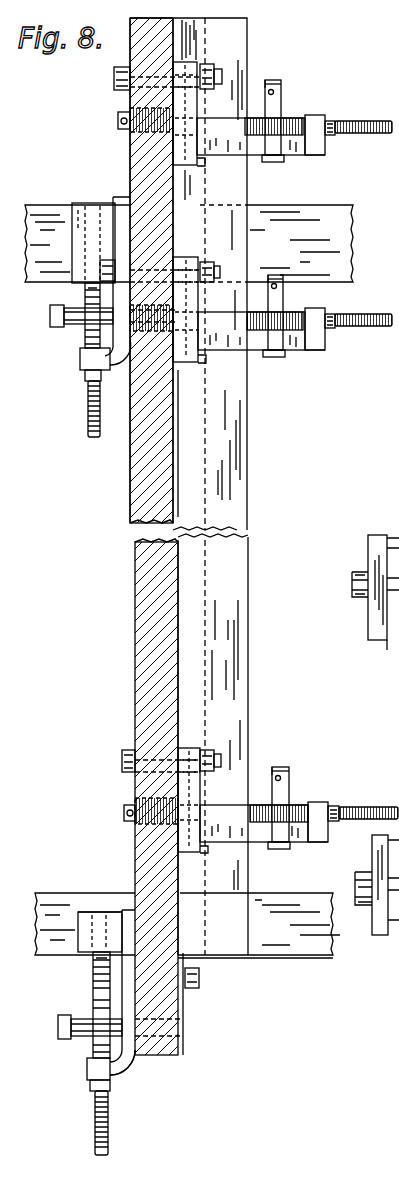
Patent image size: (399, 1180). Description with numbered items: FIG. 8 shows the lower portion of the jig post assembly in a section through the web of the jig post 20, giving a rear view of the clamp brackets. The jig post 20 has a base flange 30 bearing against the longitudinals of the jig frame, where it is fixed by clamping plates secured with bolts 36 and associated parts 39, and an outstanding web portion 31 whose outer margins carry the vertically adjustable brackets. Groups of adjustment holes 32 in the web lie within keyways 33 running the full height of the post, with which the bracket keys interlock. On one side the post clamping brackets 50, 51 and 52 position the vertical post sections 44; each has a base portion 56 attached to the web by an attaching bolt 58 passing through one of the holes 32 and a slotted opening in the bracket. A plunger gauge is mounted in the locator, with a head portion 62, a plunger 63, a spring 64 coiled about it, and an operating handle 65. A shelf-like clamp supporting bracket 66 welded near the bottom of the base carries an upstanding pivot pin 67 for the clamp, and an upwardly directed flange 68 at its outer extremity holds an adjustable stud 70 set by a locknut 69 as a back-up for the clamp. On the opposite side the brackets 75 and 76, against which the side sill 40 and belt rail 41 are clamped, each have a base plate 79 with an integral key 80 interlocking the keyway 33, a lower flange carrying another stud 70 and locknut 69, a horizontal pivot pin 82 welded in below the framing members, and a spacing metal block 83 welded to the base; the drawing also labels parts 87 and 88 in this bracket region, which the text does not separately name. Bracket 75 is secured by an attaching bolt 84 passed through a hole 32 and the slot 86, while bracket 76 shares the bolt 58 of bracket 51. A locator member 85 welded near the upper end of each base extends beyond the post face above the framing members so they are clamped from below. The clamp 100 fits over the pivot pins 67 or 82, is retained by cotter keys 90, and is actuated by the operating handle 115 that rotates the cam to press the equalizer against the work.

The jig post 20 is at (127, 585).
The base flange 30 is at (370, 662).
The web portion 31 is at (130, 516).
The adjustment holes 32 is at (132, 480).
The keyway 33 is at (176, 628).
The bolt 36 is at (352, 582).
The plate 39 is at (368, 624).
The side sill 40 is at (296, 957).
The belt rail 41 is at (337, 205).
The vertical post sections 44 is at (243, 36).
The bracket 50 is at (326, 794).
The post supporting bracket 51 is at (320, 348).
The bracket 52 is at (320, 152).
The base portion 56 is at (132, 97).
The attaching bolt 58 is at (114, 72).
The head portion 62 is at (199, 124).
The plunger 63 is at (203, 162).
The spring 64 is at (132, 144).
The operating handle 65 is at (118, 122).
The clamp supporting bracket 66 is at (300, 156).
The pivot pin 67 is at (273, 80).
The flange 68 is at (318, 115).
The locknut 69 is at (333, 136).
The adjustable stud 70 is at (302, 118).
The bracket 75 is at (132, 1070).
The bracket 76 is at (73, 365).
The base plate 79 is at (122, 197).
The key 80 is at (178, 372).
The pivot pin 82 is at (92, 978).
The metal block 83 is at (85, 292).
The attaching bolt 84 is at (200, 979).
The locator member 85 is at (72, 205).
The slot 86 is at (104, 370).
The body 87 is at (84, 376).
The bolt 88 is at (50, 308).
The cotter keys 90 is at (282, 90).
The clamp 100 is at (250, 118).
The operating handle 115 is at (372, 121).